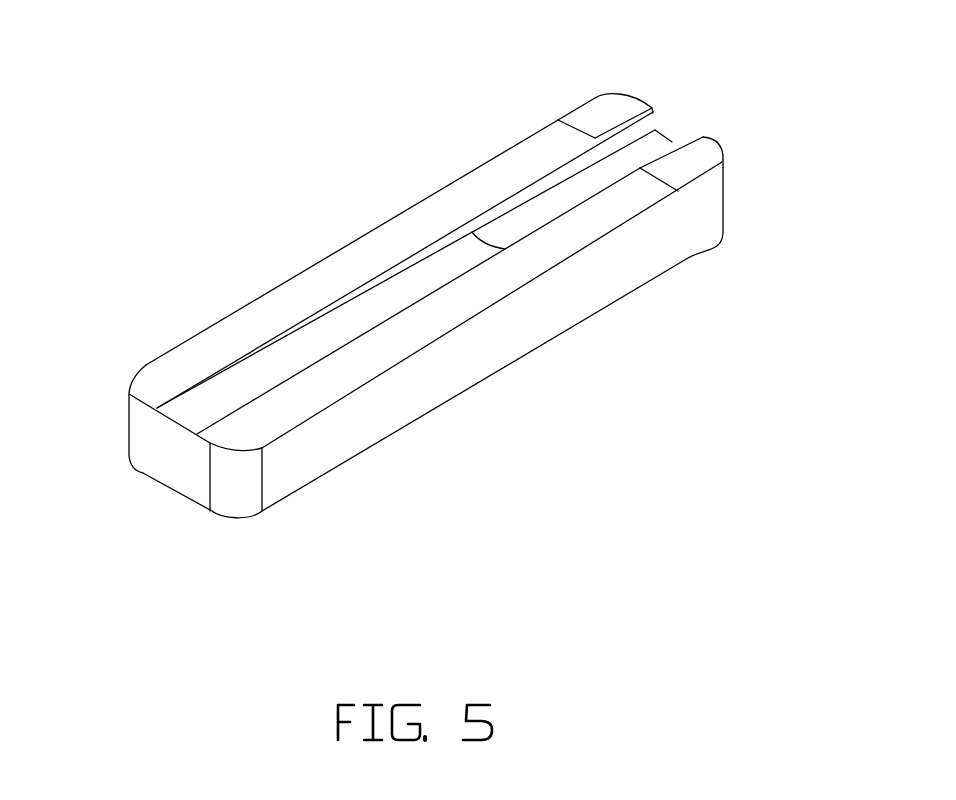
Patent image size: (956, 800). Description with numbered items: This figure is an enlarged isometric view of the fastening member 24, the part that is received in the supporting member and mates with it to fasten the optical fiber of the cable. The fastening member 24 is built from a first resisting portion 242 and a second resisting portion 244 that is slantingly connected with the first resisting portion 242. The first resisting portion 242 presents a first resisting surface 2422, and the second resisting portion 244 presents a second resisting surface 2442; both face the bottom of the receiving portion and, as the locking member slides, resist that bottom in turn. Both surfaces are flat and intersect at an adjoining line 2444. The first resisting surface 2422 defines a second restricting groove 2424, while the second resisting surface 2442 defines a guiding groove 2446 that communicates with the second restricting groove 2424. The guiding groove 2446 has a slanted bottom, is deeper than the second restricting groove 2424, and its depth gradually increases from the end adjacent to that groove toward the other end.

The fastening member 24 is at (818, 289).
The first resisting portion 242 is at (545, 325).
The first resisting surface 2422 is at (500, 172).
The second restricting groove 2424 is at (203, 402).
The second resisting portion 244 is at (707, 222).
The second resisting surface 2442 is at (598, 113).
The adjoining line 2444 is at (578, 122).
The guiding groove 2446 is at (672, 142).